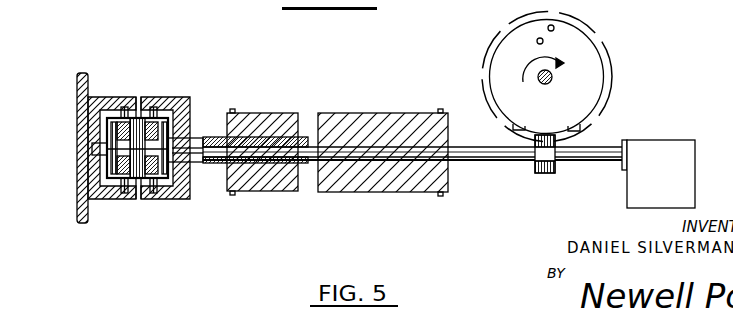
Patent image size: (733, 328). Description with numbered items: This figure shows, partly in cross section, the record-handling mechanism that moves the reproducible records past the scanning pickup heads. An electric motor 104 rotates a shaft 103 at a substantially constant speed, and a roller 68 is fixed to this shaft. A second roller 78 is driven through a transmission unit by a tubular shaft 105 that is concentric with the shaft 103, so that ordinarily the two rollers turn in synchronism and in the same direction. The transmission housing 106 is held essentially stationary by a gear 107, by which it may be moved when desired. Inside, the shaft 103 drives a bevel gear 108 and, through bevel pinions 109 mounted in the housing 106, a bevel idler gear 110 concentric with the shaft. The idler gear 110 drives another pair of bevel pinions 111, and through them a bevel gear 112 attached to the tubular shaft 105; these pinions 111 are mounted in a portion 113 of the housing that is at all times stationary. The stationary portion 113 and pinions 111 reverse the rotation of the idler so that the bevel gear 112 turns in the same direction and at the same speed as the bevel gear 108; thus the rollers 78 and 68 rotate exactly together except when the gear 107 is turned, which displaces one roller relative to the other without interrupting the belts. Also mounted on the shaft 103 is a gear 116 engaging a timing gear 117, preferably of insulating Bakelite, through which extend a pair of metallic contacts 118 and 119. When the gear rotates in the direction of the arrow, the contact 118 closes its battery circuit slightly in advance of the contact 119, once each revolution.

The roller 68 is at (393, 122).
The roller 78 is at (278, 191).
The shaft 103 is at (478, 157).
The electric motor 104 is at (647, 148).
The tubular shaft 105 is at (300, 161).
The transmission housing 106 is at (95, 123).
The gear 107 is at (82, 220).
The bevel gear 108 is at (113, 162).
The bevel pinions 109 is at (122, 104).
The bevel idler gear 110 is at (138, 127).
The bevel pinions 111 is at (154, 105).
The bevel gear 112 is at (167, 137).
The stationary housing portion 113 is at (188, 197).
The gear 116 is at (542, 173).
The timing gear 117 is at (590, 65).
The metallic contact 118 is at (554, 26).
The metallic contact 119 is at (537, 39).